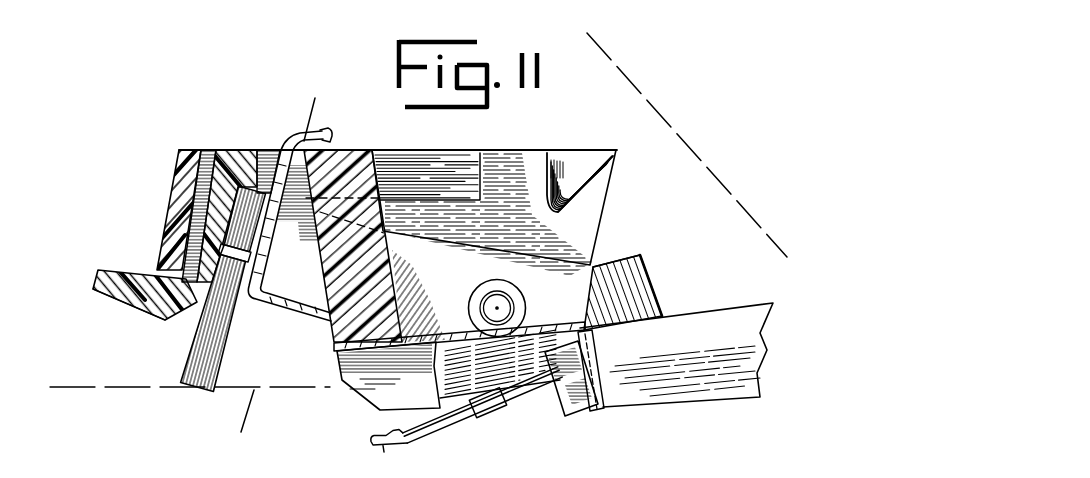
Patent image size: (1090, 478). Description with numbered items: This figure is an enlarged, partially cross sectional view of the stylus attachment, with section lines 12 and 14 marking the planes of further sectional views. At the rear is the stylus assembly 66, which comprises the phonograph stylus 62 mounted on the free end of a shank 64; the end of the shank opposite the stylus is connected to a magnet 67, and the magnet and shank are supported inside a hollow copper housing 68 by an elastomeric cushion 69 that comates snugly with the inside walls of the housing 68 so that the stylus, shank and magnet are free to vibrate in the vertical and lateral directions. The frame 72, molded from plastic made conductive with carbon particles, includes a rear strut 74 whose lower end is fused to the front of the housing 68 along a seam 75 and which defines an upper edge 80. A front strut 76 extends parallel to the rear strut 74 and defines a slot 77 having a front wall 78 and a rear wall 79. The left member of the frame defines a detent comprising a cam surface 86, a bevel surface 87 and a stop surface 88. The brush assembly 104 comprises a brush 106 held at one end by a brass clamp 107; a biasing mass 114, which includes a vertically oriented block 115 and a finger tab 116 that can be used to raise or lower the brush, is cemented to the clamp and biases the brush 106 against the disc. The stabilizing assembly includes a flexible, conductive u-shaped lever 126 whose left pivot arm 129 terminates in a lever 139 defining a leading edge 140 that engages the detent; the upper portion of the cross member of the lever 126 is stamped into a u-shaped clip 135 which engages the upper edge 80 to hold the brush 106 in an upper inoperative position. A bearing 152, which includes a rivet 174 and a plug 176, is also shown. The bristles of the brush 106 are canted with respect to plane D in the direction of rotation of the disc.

The slot 77 is at (269, 63).
The section line 12 is at (313, 111).
The section line 14 is at (583, 58).
The front strut 76 is at (187, 150).
The front wall 78 is at (209, 150).
The vertically oriented block 115 is at (250, 150).
The rear strut 74 is at (338, 150).
The frame 72 is at (377, 146).
The stop surface 88 is at (484, 160).
The bevel surface 87 is at (557, 163).
The cam surface 86 is at (603, 178).
The bearing 152 is at (516, 274).
The leading edge 140 is at (618, 258).
The lever 139 is at (652, 268).
The finger tab 116 is at (98, 270).
The upper edge 80 is at (300, 210).
The brass clamp 107 is at (264, 250).
The biasing mass 114 is at (153, 325).
The brush 106 is at (190, 350).
The left pivot arm 129 is at (287, 316).
The u-shaped lever 126 is at (300, 318).
The rear wall 79 is at (337, 351).
The seam 75 is at (335, 354).
The rivet 174 is at (472, 291).
The plug 176 is at (512, 304).
The brush assembly 104 is at (130, 400).
The plane D is at (80, 386).
The phonograph stylus 62 is at (378, 447).
The shank 64 is at (447, 428).
The magnet 67 is at (533, 394).
The elastomeric cushion 69 is at (583, 396).
The hollow copper housing 68 is at (588, 400).
The stylus assembly 66 is at (727, 407).
The u-shaped clip 135 is at (326, 130).